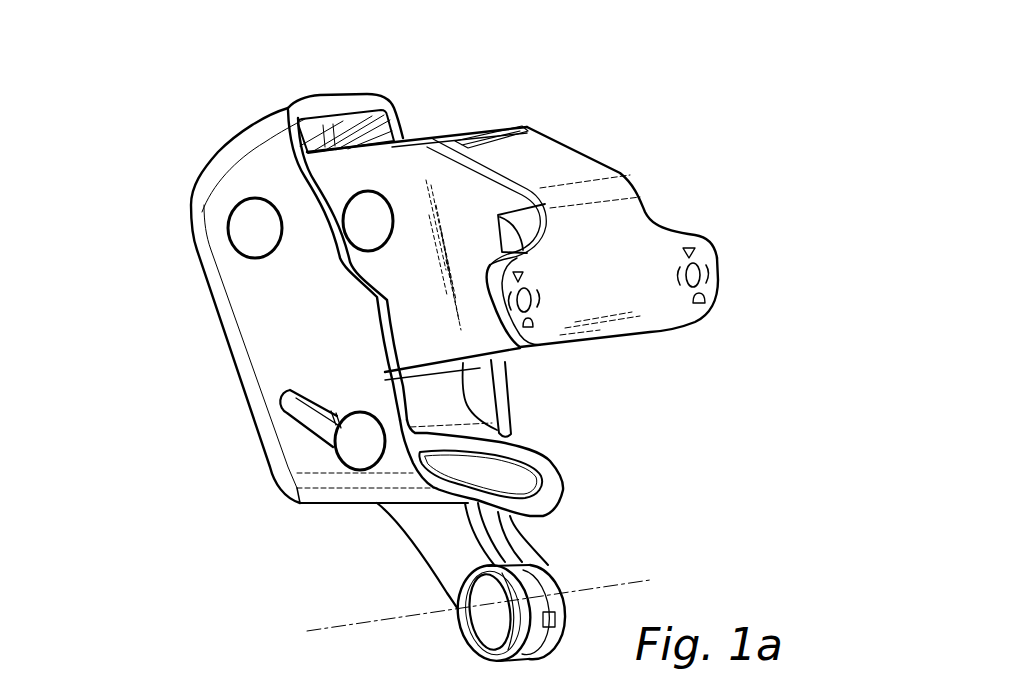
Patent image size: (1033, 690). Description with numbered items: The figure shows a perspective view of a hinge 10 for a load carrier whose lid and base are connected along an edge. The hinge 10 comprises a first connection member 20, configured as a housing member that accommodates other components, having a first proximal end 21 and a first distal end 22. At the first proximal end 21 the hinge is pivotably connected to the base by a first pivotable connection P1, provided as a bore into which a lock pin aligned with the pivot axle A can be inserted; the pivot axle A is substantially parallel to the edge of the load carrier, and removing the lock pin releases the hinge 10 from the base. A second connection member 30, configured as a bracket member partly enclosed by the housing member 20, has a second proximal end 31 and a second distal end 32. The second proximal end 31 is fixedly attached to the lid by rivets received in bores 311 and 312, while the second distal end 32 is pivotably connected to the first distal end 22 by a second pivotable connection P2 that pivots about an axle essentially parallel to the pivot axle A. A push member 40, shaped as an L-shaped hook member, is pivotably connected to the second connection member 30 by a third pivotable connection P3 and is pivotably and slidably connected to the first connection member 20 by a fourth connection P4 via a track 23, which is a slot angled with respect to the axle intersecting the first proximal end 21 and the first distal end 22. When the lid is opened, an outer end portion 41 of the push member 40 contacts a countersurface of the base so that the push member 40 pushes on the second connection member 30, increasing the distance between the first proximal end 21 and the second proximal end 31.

The hinge 10 is at (654, 64).
The first connection member 20 is at (391, 388).
The first proximal end 21 is at (461, 596).
The first distal end 22 is at (193, 172).
The track 23 is at (293, 420).
The second connection member 30 is at (552, 215).
The second proximal end 31 is at (647, 278).
The bore 311 is at (535, 297).
The bore 312 is at (707, 273).
The second distal end 32 is at (374, 99).
The push member 40 is at (525, 463).
The outer end portion 41 is at (561, 476).
The first pivotable connection P1 is at (486, 623).
The second pivotable connection P2 is at (250, 229).
The third pivotable connection P3 is at (362, 221).
The fourth connection P4 is at (350, 452).
The pivot axle A is at (493, 597).